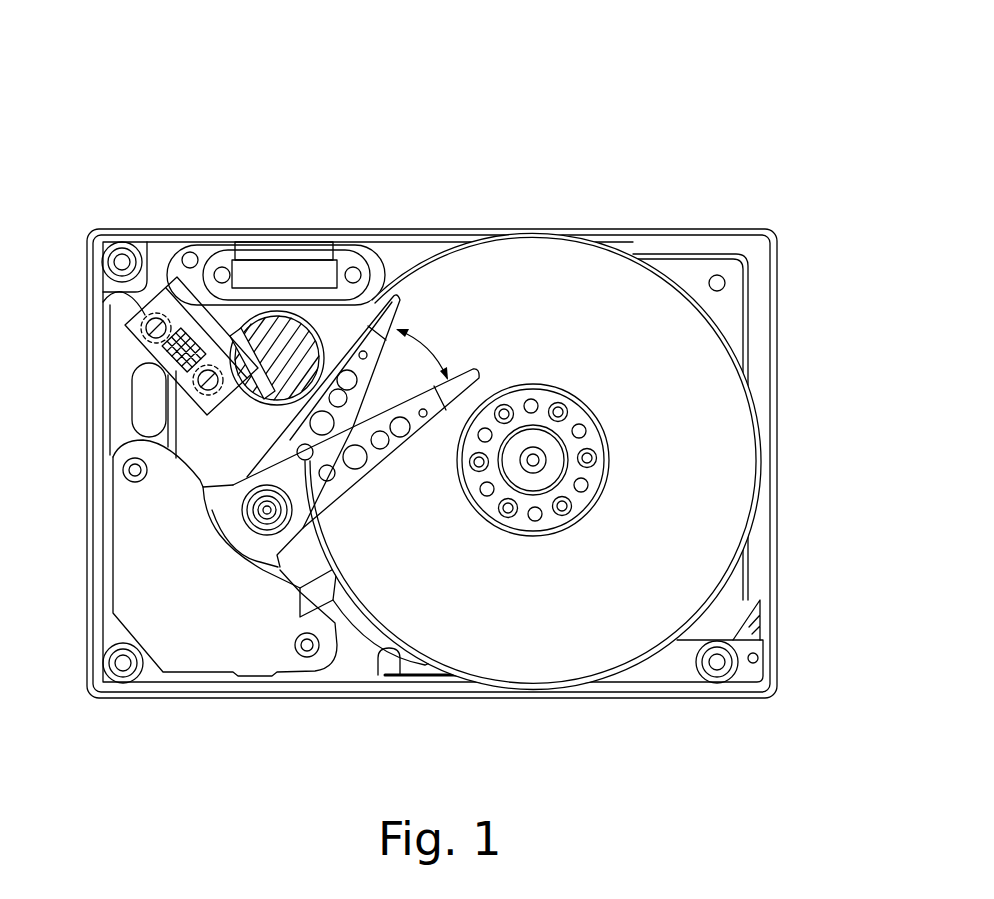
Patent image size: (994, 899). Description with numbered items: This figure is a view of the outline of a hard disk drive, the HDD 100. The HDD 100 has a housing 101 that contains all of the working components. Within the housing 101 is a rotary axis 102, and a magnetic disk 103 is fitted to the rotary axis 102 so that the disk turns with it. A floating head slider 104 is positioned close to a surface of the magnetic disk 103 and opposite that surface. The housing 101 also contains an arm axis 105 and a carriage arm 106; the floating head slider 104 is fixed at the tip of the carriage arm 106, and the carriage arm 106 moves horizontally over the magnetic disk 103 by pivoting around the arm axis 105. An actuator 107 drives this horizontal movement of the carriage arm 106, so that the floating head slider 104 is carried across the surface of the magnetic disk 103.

The HDD 100 is at (600, 140).
The housing 101 is at (648, 229).
The rotary axis 102 is at (552, 470).
The magnetic disk 103 is at (728, 413).
The floating head slider 104 is at (463, 376).
The arm axis 105 is at (267, 514).
The carriage arm 106 is at (340, 493).
The actuator 107 is at (180, 652).